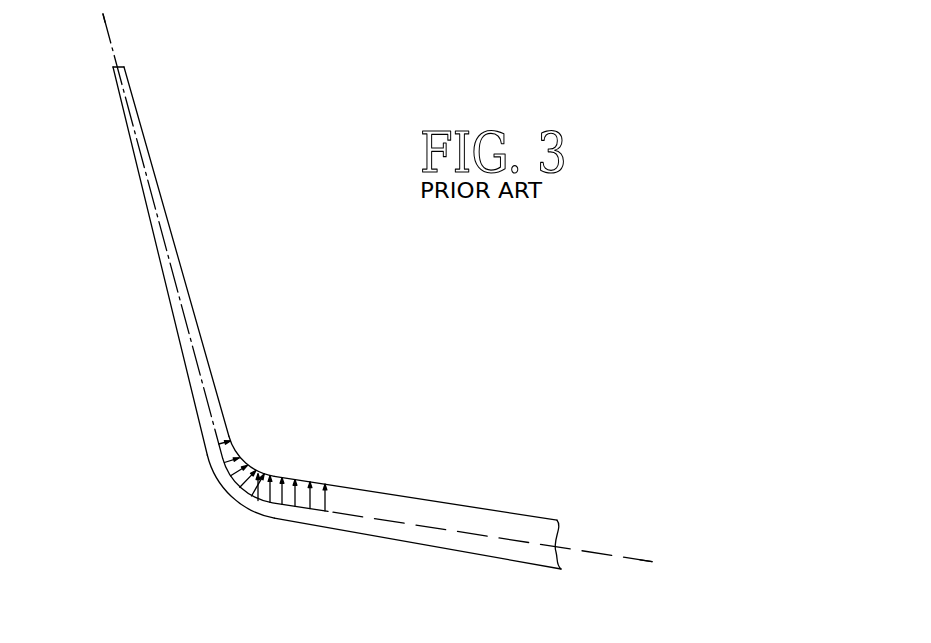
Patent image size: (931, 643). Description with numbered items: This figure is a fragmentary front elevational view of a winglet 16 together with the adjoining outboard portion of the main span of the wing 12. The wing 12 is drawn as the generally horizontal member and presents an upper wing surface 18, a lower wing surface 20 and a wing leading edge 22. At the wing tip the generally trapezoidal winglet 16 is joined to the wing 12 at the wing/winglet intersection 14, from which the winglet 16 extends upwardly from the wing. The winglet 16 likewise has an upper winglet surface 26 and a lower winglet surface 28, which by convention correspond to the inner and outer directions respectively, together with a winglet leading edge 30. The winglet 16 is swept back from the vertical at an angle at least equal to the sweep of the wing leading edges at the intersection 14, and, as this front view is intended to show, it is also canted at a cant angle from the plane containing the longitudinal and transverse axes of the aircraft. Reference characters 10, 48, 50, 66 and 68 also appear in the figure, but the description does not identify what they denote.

The hockey stick 10 is at (350, 312).
The wing 12 is at (463, 537).
The wing/winglet intersection 14 is at (209, 503).
The winglet 16 is at (151, 230).
The upper wing surface 18 is at (487, 507).
The lower wing surface 20 is at (490, 555).
The wing leading edge 22 is at (437, 528).
The upper winglet surface 26 is at (183, 273).
The lower winglet surface 28 is at (153, 242).
The winglet leading edge 30 is at (150, 188).
The blade axis end point 48 is at (642, 562).
The shaft axis end point 50 is at (108, 32).
The force arrows on blade 66 is at (296, 519).
The force arrows at heel 68 is at (190, 465).